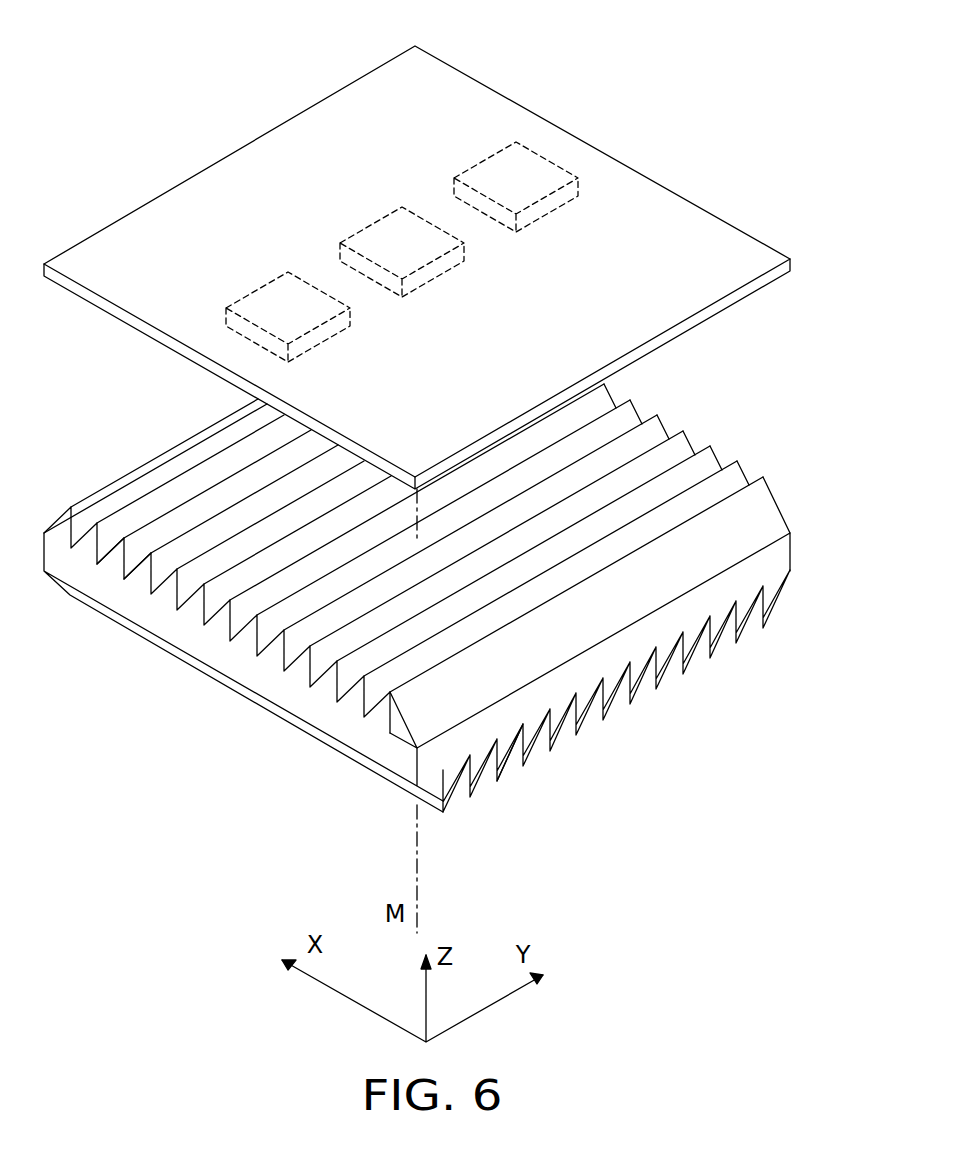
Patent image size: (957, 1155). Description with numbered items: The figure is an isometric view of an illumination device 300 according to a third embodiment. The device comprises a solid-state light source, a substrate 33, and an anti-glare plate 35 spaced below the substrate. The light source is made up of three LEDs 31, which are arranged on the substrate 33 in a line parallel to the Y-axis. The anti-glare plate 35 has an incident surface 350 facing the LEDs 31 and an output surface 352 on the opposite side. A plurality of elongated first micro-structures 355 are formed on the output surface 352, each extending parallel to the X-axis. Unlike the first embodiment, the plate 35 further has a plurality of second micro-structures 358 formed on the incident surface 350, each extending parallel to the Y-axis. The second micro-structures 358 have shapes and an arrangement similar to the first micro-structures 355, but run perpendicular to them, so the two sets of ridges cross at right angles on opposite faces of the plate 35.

The illumination device 300 is at (254, 53).
The LEDs 31 is at (520, 175).
The substrate 33 is at (712, 316).
The anti-glare plate 35 is at (166, 416).
The incident surface 350 is at (71, 549).
The output surface 352 is at (587, 707).
The first micro-structures 355 is at (489, 764).
The second micro-structures 358 is at (118, 557).